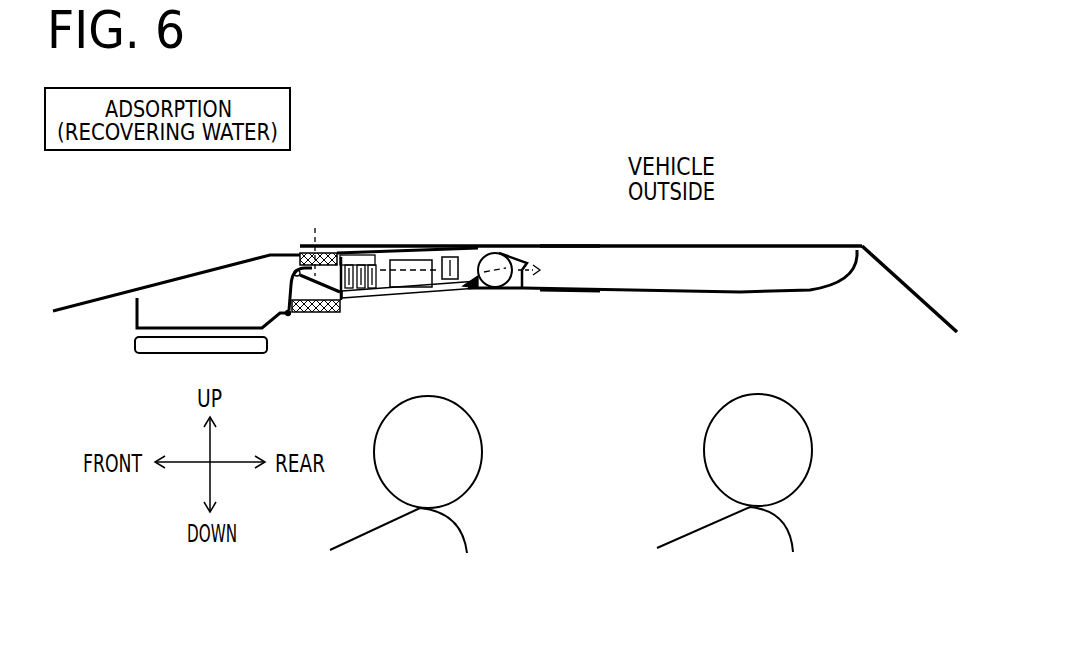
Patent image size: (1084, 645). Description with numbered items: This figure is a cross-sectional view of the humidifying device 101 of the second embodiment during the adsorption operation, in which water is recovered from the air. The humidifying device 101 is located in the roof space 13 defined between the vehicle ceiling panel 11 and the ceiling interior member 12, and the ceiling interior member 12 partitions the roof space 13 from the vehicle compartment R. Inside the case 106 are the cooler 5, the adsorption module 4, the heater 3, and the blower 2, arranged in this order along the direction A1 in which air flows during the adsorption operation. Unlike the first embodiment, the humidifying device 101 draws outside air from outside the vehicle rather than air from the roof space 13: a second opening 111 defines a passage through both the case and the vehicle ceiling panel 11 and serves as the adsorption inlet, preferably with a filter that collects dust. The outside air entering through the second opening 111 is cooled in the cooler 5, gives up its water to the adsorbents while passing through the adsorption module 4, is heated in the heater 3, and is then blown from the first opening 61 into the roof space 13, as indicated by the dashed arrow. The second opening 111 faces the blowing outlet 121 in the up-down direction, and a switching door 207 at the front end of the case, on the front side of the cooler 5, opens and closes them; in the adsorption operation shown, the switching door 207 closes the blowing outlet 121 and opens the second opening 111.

The blower 2 is at (497, 251).
The heater 3 is at (448, 253).
The adsorption module 4 is at (413, 250).
The cooler 5 is at (363, 253).
The vehicle ceiling panel 11 is at (557, 245).
The ceiling interior member 12 is at (562, 293).
The roof space 13 is at (657, 263).
The first opening 61 is at (518, 291).
The humidifying device 101 is at (413, 308).
The case 106 is at (403, 252).
The second opening 111 is at (333, 253).
The blowing outlet 121 is at (293, 314).
The switching door 207 is at (302, 255).
The direction of air flow in adsorption operation A1 is at (467, 262).
The vehicle compartment R is at (571, 473).